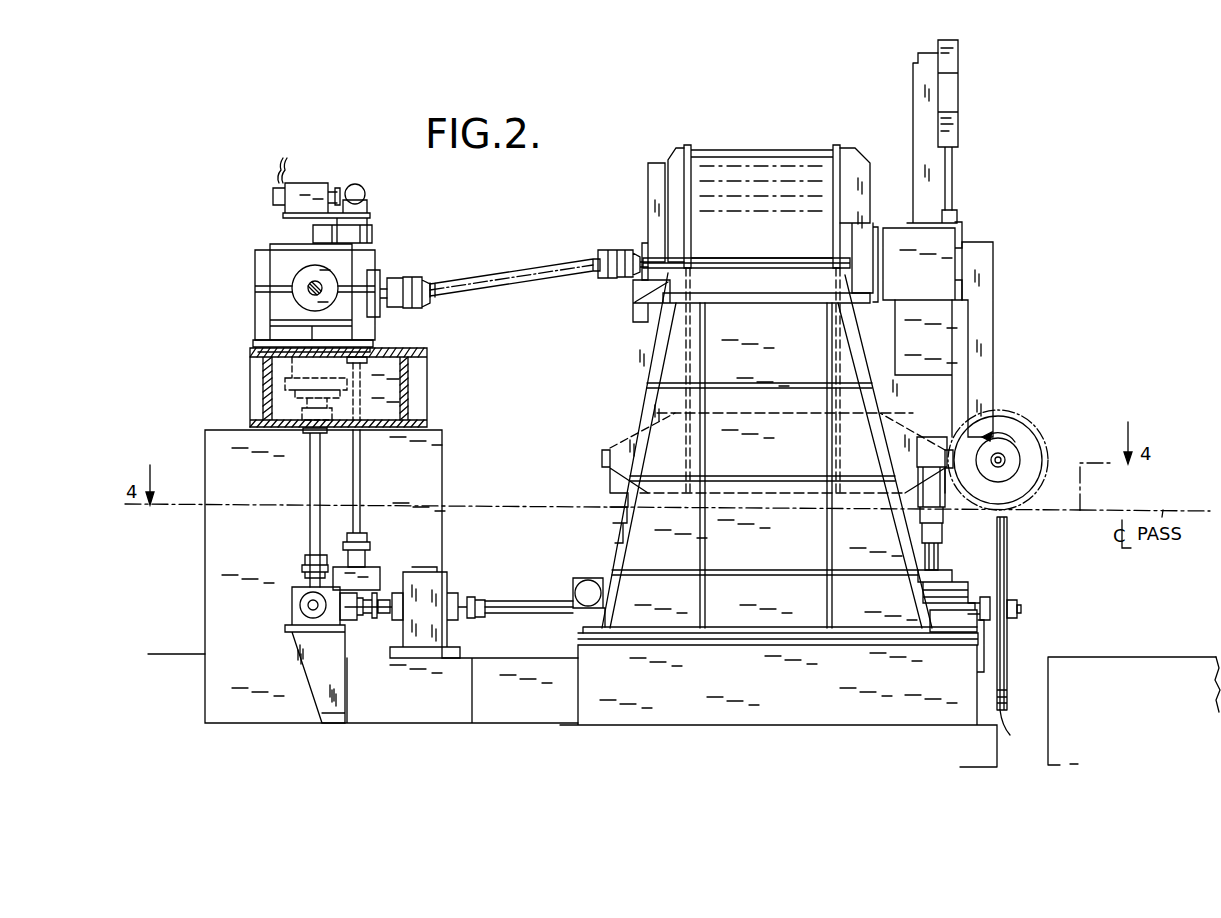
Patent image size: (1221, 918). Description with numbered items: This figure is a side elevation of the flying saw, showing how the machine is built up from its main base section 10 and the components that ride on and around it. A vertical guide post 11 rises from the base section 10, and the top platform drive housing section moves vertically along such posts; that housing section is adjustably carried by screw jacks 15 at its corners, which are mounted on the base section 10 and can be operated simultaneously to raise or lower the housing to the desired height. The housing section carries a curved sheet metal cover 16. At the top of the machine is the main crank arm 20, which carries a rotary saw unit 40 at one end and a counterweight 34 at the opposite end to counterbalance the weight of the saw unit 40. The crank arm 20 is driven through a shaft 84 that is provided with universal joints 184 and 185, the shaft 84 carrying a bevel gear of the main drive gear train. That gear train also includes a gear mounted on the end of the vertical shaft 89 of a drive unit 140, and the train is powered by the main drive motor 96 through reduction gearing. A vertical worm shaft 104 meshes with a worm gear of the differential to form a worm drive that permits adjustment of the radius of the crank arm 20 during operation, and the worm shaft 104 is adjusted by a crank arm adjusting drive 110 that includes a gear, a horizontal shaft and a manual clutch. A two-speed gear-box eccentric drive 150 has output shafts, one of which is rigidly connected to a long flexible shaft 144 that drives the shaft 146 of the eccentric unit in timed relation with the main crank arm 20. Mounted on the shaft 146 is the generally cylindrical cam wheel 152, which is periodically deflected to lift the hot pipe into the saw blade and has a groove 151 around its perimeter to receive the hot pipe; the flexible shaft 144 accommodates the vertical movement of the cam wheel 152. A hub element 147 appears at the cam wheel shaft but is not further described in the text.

The main base section 10 is at (764, 713).
The vertical guide post 11 is at (817, 537).
The screw jack 15 is at (936, 553).
The curved sheet metal cover 16 is at (762, 158).
The main crank arm 20 is at (985, 321).
The counterweight 34 is at (952, 56).
The rotary saw unit 40 is at (1022, 412).
The shaft 84 is at (516, 281).
The vertical shaft 89 is at (311, 476).
The main drive motor 96 is at (277, 273).
The vertical worm shaft 104 is at (362, 476).
The crank arm adjusting drive 110 is at (373, 576).
The drive unit 140 is at (292, 605).
The long flexible shaft 144 is at (530, 611).
The shaft 146 is at (1021, 610).
The hub 147 is at (1013, 603).
The two-speed gear-box eccentric drive 150 is at (457, 575).
The groove 151 is at (1021, 727).
The cam wheel 152 is at (1008, 550).
The universal joint 184 is at (416, 306).
The universal joint 185 is at (608, 248).